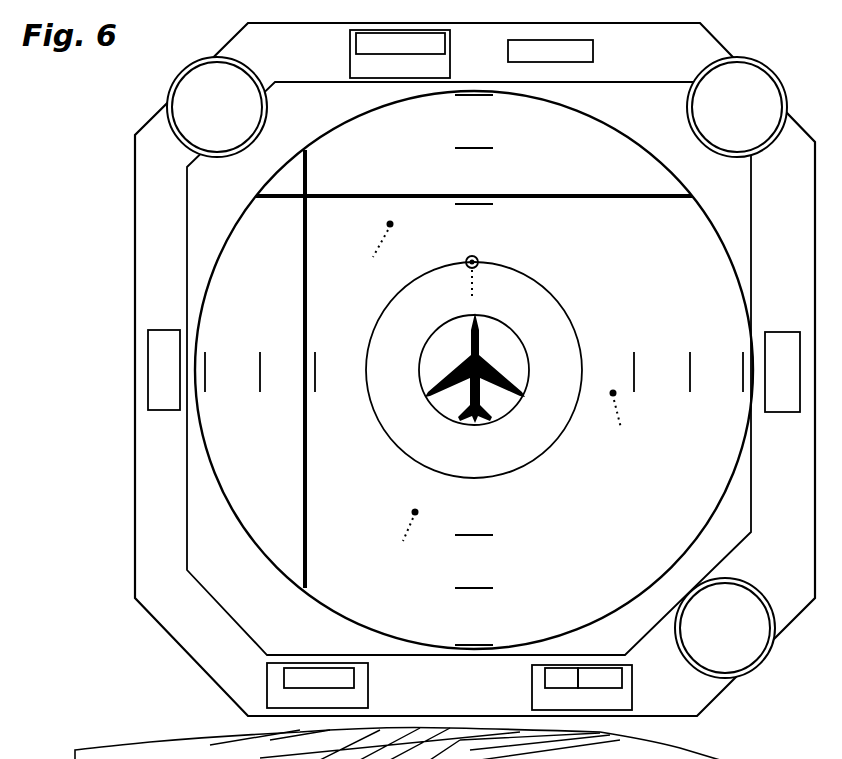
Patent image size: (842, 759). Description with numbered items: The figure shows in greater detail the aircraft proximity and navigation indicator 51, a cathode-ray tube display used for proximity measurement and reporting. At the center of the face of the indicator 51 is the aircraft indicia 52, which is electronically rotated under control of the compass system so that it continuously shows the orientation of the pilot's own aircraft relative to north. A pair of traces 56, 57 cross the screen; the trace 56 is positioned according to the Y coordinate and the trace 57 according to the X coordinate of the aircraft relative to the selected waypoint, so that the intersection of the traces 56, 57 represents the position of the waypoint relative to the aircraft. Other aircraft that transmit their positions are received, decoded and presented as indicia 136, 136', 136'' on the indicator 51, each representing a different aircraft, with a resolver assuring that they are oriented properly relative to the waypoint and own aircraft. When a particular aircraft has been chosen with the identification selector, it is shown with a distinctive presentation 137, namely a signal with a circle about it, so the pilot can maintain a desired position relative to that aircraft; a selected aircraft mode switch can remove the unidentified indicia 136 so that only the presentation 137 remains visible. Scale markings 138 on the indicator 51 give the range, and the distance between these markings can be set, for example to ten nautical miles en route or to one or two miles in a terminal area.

The cathode-ray tube indicator 51 is at (731, 36).
The aircraft indicia 52 is at (482, 364).
The Y trace 56 is at (604, 199).
The X trace 57 is at (302, 482).
The aircraft indicia 136 is at (602, 425).
The aircraft indicia 136' is at (378, 512).
The aircraft indicia 136'' is at (356, 235).
The selected aircraft presentation 137 is at (480, 259).
The scale markings 138 is at (487, 588).